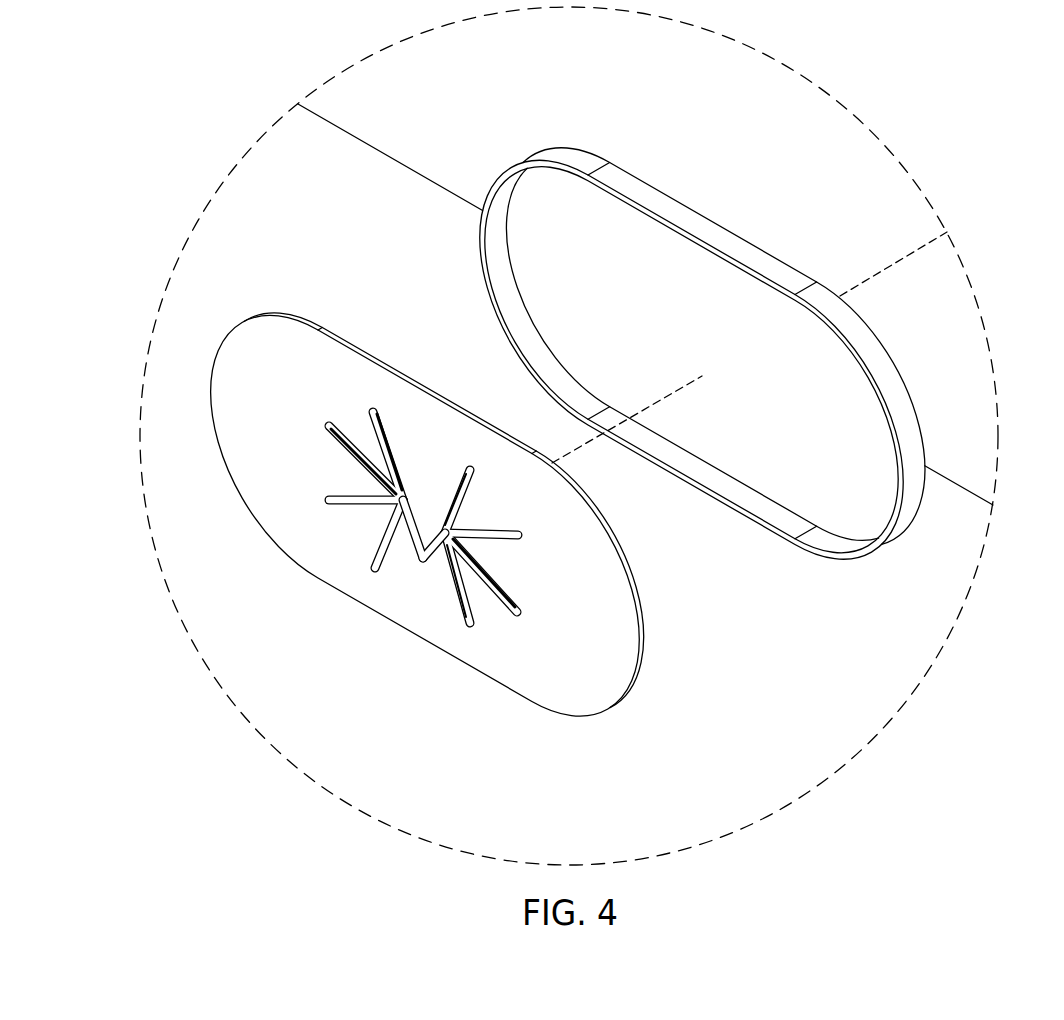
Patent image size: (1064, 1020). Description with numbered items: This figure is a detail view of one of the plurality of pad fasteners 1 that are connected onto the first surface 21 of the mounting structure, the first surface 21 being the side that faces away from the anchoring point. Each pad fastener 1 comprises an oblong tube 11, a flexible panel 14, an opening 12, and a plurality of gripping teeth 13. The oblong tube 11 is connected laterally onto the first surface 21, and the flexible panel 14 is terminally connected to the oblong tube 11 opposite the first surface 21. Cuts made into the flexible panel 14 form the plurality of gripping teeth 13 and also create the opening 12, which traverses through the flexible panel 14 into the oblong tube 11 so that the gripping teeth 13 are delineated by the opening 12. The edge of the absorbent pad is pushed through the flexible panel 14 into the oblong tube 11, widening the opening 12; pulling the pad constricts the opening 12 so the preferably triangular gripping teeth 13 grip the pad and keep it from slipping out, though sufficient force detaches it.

The pad fastener 1 is at (307, 196).
The oblong tube 11 is at (736, 237).
The opening 12 is at (445, 528).
The plurality of gripping teeth 13 is at (385, 495).
The flexible panel 14 is at (241, 405).
The first surface 21 is at (622, 106).